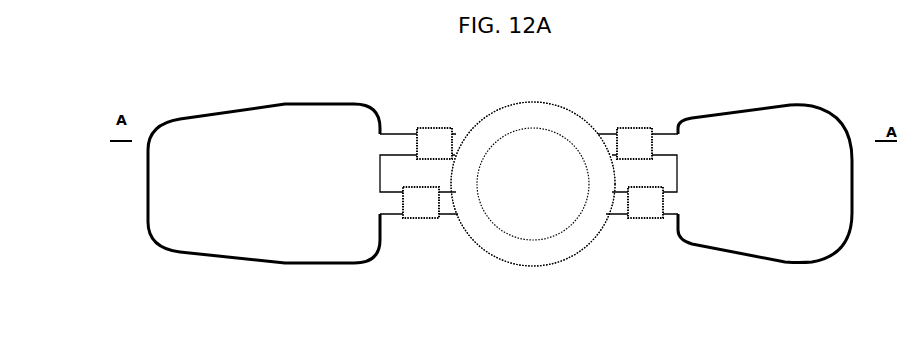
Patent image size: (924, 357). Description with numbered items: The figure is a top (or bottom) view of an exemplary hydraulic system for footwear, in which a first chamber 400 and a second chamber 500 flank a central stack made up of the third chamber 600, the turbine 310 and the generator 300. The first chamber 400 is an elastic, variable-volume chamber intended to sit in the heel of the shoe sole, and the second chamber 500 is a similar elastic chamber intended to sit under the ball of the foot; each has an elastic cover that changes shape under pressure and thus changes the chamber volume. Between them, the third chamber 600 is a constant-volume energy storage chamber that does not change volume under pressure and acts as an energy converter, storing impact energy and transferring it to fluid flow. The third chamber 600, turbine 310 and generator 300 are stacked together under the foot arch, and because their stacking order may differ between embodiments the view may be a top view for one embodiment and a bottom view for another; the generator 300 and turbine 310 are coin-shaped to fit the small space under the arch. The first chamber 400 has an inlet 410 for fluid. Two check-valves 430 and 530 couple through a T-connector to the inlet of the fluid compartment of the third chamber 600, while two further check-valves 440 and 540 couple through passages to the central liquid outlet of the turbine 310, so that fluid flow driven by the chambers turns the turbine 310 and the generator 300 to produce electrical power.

The generator 300 is at (533, 184).
The turbine 310 is at (564, 104).
The third chamber 600 is at (533, 180).
The first chamber 400 is at (320, 103).
The inlet 410 is at (377, 207).
The check-valve 430 is at (440, 126).
The check-valve 440 is at (423, 221).
The second chamber 500 is at (793, 104).
The check-valve 530 is at (638, 221).
The check-valve 540 is at (641, 126).